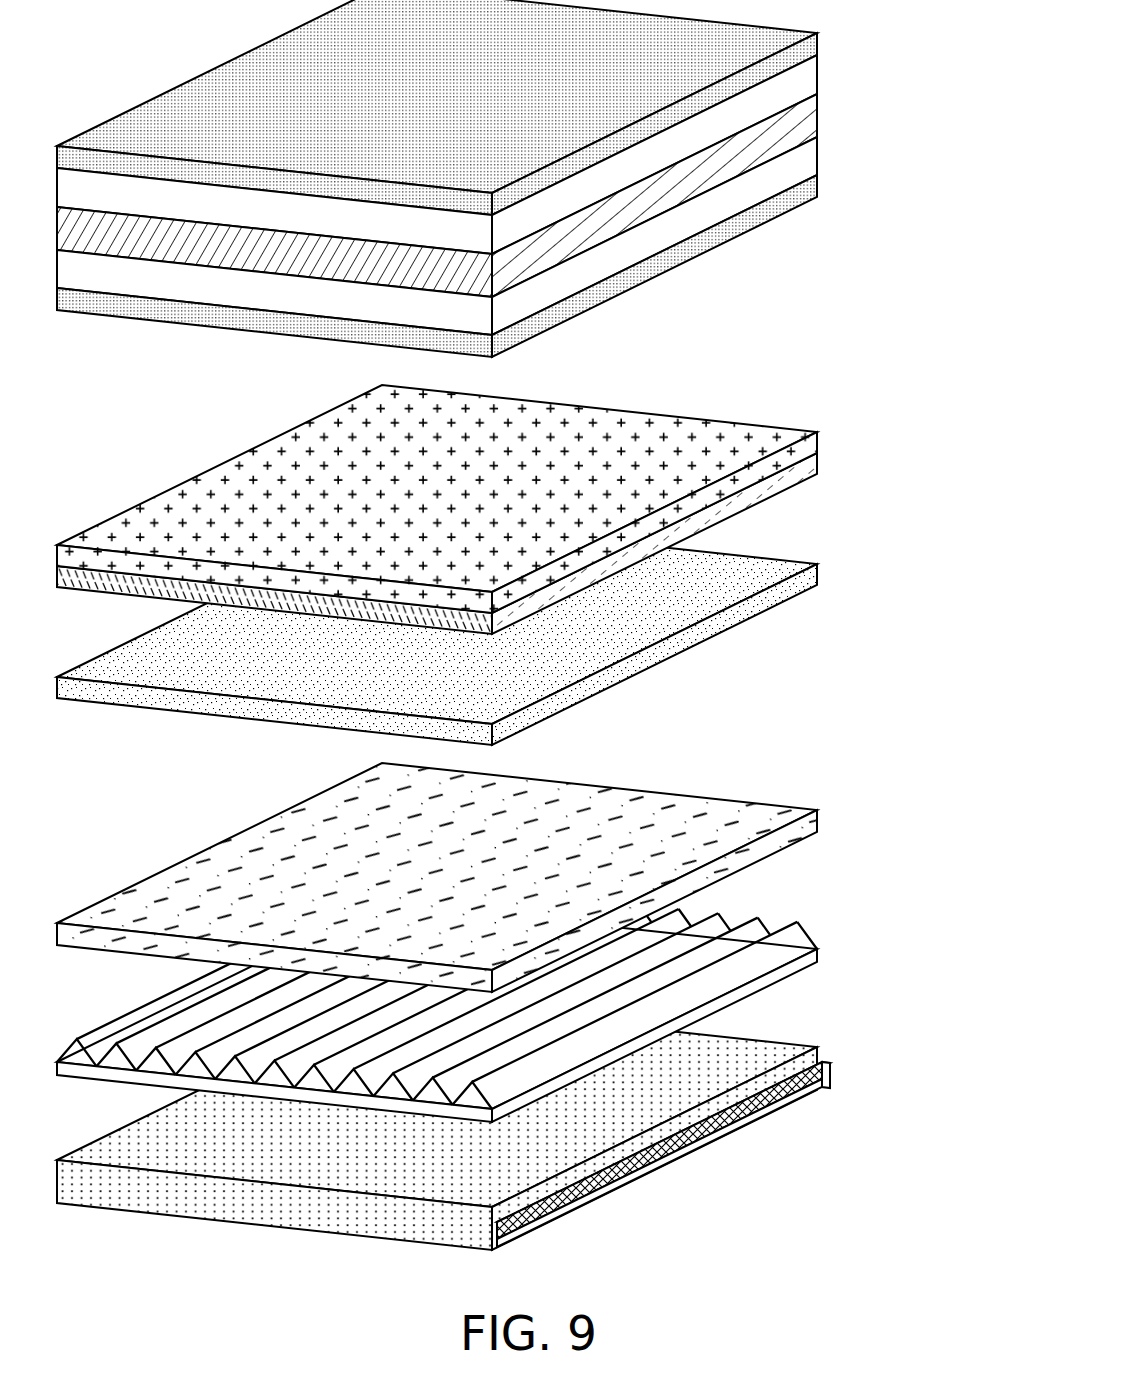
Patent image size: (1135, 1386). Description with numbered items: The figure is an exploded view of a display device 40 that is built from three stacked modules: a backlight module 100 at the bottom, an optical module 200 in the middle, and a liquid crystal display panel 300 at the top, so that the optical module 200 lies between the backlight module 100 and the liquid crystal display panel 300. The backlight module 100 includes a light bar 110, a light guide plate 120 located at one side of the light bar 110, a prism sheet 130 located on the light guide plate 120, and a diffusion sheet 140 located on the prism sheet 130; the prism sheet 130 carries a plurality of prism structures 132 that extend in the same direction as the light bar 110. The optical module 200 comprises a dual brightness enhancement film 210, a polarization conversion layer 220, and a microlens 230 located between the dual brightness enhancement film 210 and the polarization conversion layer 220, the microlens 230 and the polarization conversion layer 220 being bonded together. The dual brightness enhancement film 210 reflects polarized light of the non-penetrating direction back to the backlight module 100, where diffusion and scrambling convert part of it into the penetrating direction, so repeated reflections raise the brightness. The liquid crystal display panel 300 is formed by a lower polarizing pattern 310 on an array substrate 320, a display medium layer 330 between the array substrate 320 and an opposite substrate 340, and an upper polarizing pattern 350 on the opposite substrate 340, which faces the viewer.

The display device 40 is at (514, 632).
The backlight module 100 is at (514, 1006).
The light bar 110 is at (827, 1068).
The light guide plate 120 is at (757, 1058).
The prism sheet 130 is at (482, 1000).
The prism structures 132 is at (805, 945).
The diffusion sheet 140 is at (482, 877).
The optical module 200 is at (514, 565).
The dual brightness enhancement film 210 is at (805, 580).
The polarization conversion layer 220 is at (915, 593).
The microlens 230 is at (805, 469).
The liquid crystal display panel 300 is at (514, 178).
The lower polarizing pattern 310 is at (482, 266).
The array substrate 320 is at (807, 165).
The display medium layer 330 is at (803, 122).
The opposite substrate 340 is at (803, 82).
The upper polarizing pattern 350 is at (806, 44).